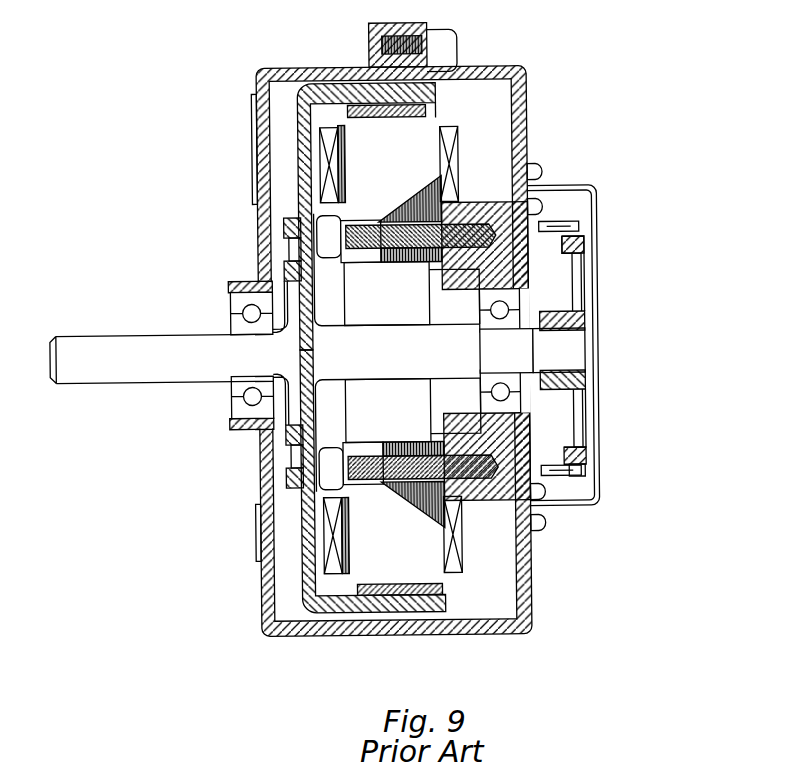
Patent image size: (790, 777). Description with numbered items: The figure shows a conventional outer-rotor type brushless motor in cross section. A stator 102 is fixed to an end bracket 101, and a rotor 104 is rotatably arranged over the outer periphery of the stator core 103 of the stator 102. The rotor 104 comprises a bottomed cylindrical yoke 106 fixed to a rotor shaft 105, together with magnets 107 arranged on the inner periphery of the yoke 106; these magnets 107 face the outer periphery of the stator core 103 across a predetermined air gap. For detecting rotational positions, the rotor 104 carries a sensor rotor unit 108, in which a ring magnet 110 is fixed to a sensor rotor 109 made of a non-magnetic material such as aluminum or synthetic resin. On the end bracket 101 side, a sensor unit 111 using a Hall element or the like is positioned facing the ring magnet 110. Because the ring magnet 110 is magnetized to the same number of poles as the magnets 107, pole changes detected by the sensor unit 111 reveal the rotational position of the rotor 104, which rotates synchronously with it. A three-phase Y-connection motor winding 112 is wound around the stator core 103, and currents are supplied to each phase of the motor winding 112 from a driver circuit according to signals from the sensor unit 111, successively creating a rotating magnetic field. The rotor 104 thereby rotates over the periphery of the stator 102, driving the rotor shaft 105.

The end bracket 101 is at (535, 614).
The stator 102 is at (452, 118).
The stator core 103 is at (418, 143).
The rotor 104 is at (302, 532).
The rotor shaft 105 is at (160, 372).
The yoke 106 is at (300, 170).
The magnets 107 is at (363, 103).
The sensor rotor unit 108 is at (583, 306).
The sensor rotor 109 is at (583, 447).
The ring magnet 110 is at (581, 482).
The sensor unit 111 is at (586, 472).
The motor winding 112 is at (462, 535).